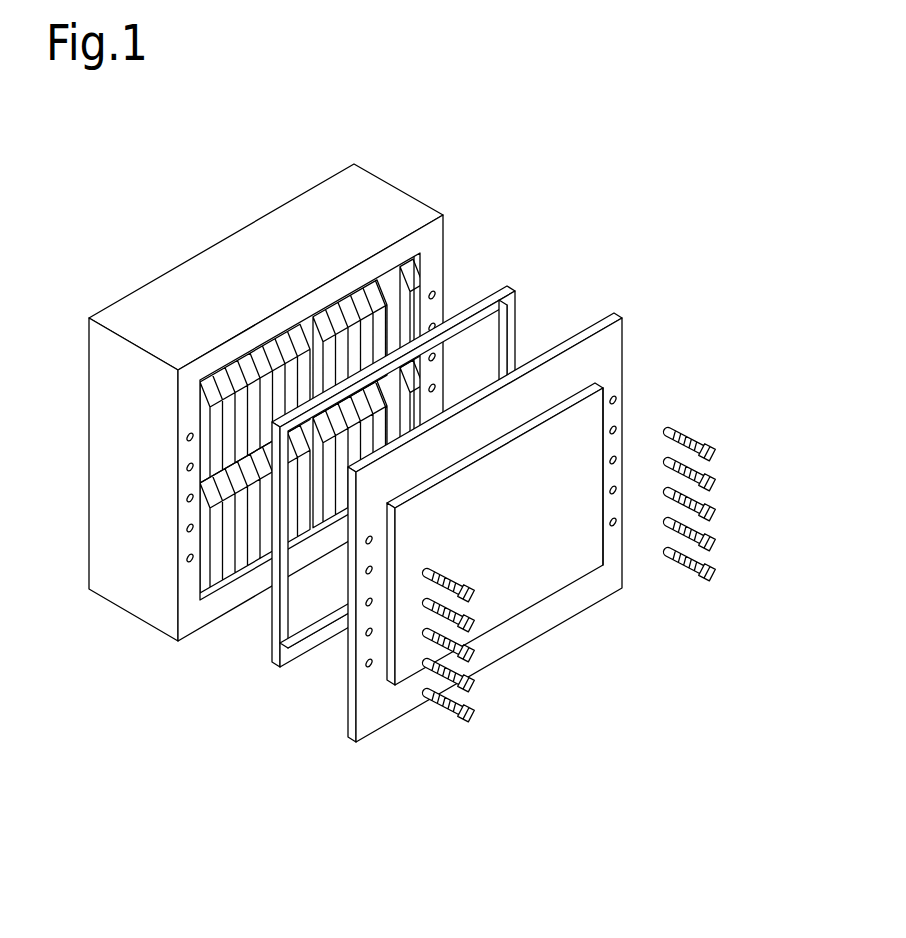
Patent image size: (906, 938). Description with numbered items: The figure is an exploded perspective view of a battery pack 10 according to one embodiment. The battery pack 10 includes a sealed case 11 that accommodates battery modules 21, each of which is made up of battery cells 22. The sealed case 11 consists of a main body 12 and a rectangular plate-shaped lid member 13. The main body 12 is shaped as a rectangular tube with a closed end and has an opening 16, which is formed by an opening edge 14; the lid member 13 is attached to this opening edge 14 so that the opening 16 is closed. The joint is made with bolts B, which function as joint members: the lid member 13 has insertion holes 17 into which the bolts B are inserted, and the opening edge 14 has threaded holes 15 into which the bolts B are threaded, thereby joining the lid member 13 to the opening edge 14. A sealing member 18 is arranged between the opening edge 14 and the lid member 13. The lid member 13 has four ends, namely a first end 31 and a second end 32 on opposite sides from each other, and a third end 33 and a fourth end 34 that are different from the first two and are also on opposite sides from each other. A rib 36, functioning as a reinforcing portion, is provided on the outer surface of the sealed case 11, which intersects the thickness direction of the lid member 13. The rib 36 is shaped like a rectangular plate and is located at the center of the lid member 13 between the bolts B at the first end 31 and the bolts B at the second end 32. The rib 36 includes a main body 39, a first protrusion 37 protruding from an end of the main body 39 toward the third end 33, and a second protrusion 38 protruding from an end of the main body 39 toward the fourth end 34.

The battery pack 10 is at (736, 226).
The sealed case 11 is at (237, 759).
The main body 12 is at (130, 616).
The lid member 13 is at (347, 712).
The opening edge 14 is at (188, 405).
The threaded holes 15 is at (190, 558).
The opening 16 is at (297, 333).
The insertion holes 17 is at (369, 570).
The sealing member 18 is at (515, 311).
The battery modules 21 is at (205, 520).
The battery cells 22 is at (372, 290).
The first end 31 is at (347, 676).
The second end 32 is at (625, 352).
The third end 33 is at (470, 397).
The fourth end 34 is at (520, 650).
The rib 36 is at (550, 410).
The first protrusion 37 is at (517, 462).
The second protrusion 38 is at (530, 590).
The main body 39 is at (606, 432).
The bolts B is at (468, 718).